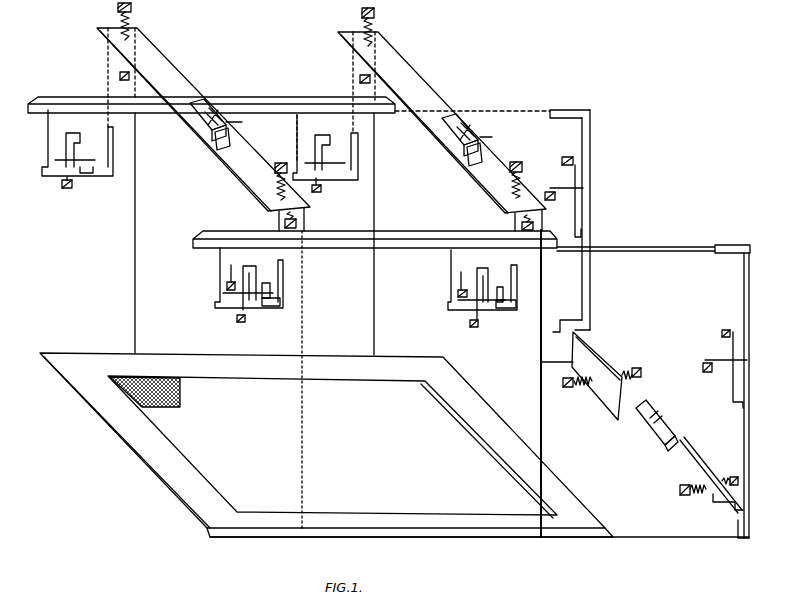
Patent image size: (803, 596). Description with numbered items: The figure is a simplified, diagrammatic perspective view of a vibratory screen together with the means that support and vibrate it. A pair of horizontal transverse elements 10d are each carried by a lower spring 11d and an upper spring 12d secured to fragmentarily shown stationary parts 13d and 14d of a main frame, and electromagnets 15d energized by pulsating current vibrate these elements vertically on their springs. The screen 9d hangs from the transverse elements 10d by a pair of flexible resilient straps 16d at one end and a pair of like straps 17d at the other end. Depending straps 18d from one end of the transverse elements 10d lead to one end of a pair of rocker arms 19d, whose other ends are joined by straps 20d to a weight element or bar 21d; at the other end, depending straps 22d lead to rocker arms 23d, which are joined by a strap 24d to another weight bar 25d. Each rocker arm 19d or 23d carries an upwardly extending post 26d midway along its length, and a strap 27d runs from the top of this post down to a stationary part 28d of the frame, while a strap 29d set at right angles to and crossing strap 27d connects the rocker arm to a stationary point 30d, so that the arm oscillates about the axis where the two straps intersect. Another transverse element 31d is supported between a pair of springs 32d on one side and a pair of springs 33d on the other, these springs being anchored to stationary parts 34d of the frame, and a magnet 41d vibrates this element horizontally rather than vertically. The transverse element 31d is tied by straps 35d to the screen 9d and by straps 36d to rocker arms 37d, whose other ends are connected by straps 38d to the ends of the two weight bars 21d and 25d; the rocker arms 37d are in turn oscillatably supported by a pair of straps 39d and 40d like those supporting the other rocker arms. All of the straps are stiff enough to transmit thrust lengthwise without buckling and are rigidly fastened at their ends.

The screen 9d is at (103, 410).
The horizontal transverse element 10d is at (153, 53).
The lower spring 11d is at (128, 63).
The upper spring 12d is at (120, 22).
The stationary part of main frame 13d is at (123, 80).
The stationary part of main frame 14d is at (131, 7).
The electromagnet 15d is at (195, 123).
The flexible resilient strap 16d is at (542, 223).
The flexible resilient strap 17d is at (137, 317).
The depending strap 18d is at (278, 222).
The rocker arm 19d is at (271, 307).
The strap 20d is at (219, 272).
The weight element or bar 21d is at (402, 237).
The depending strap 22d is at (108, 72).
The rocker arm 23d is at (85, 173).
The strap 24d is at (47, 140).
The weight element or bar 25d is at (302, 100).
The upwardly extending post 26d is at (68, 133).
The strap 27d is at (238, 296).
The stationary part of main frame 28d is at (365, 335).
The strap 29d is at (386, 288).
The stationary point on main frame 30d is at (351, 276).
The transverse element 31d is at (727, 530).
The spring 32d is at (622, 372).
The spring 33d is at (582, 384).
The stationary part of supporting frame 34d is at (638, 369).
The strap 35d is at (490, 363).
The strap 36d is at (556, 332).
The rocker arm 37d is at (590, 148).
The strap 38d is at (517, 107).
The strap 39d is at (553, 190).
The strap 40d is at (576, 205).
The magnet 41d is at (665, 415).